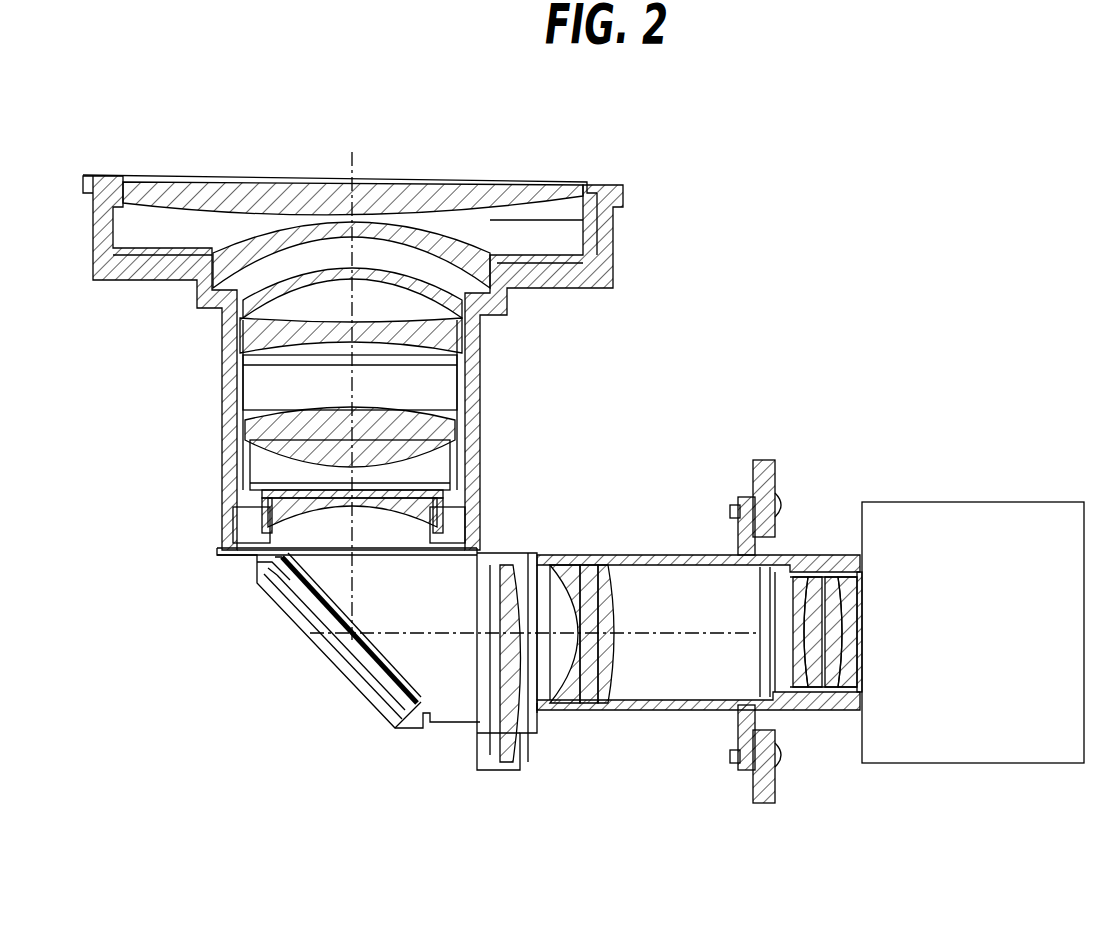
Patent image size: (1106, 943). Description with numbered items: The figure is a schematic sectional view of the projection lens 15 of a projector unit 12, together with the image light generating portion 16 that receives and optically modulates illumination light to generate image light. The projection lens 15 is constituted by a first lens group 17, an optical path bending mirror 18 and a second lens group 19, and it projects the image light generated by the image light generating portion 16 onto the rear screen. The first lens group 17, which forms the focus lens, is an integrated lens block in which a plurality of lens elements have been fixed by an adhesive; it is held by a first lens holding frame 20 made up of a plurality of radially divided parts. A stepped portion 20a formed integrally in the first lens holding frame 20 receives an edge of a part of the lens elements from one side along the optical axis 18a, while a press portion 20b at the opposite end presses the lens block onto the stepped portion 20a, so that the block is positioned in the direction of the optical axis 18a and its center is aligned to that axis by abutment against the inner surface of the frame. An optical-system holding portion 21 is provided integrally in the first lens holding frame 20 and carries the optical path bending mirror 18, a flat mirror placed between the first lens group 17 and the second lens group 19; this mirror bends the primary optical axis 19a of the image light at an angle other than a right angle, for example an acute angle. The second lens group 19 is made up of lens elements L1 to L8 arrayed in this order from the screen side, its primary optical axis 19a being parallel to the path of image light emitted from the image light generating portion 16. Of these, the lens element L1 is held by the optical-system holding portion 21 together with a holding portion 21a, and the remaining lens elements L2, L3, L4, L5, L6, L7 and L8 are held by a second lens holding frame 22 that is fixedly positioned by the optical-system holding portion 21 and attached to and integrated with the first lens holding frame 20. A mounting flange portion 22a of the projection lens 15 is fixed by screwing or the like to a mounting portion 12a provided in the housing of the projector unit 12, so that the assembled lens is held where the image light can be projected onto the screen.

The projector unit 12 is at (732, 248).
The mounting portion 12a is at (773, 466).
The projection lens 15 is at (600, 428).
The image light generating portion 16 is at (995, 497).
The first lens group 17 is at (258, 402).
The optical path bending mirror 18 is at (323, 622).
The optical axis 18a is at (350, 582).
The second lens group 19 is at (853, 809).
The primary optical axis 19a is at (722, 636).
The first lens holding frame 20 is at (212, 516).
The stepped portion 20a is at (437, 510).
The press portion 20b is at (598, 190).
The optical-system holding portion 21 is at (430, 726).
The lens holding portion 21a is at (538, 770).
The second lens holding frame 22 is at (652, 545).
The mounting flange portion 22a is at (750, 497).
The lens element L1 is at (528, 733).
The lens element L2 is at (562, 560).
The lens element L3 is at (588, 560).
The lens element L4 is at (614, 590).
The lens element L5 is at (808, 712).
The lens element L6 is at (806, 575).
The lens element L7 is at (841, 712).
The lens element L8 is at (838, 575).